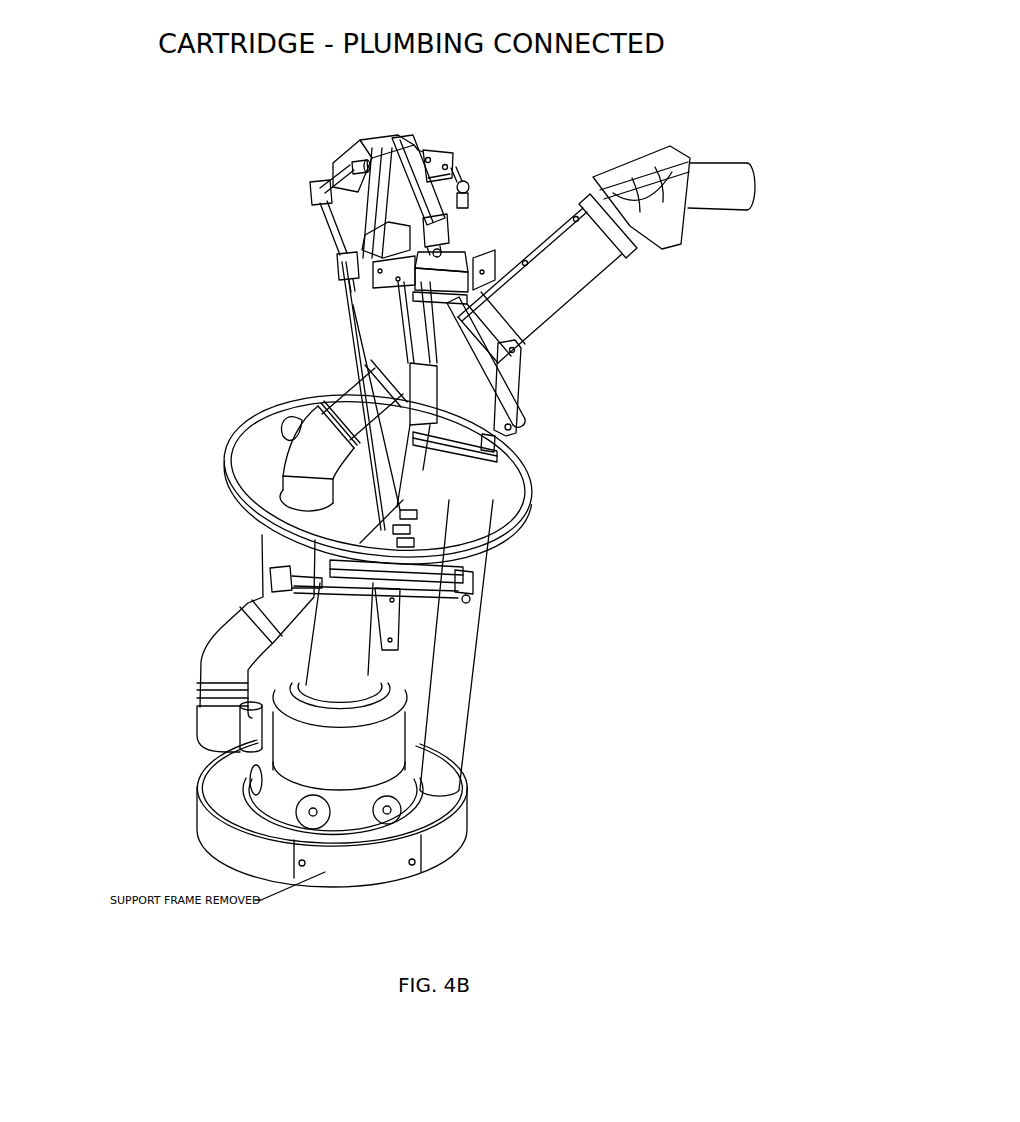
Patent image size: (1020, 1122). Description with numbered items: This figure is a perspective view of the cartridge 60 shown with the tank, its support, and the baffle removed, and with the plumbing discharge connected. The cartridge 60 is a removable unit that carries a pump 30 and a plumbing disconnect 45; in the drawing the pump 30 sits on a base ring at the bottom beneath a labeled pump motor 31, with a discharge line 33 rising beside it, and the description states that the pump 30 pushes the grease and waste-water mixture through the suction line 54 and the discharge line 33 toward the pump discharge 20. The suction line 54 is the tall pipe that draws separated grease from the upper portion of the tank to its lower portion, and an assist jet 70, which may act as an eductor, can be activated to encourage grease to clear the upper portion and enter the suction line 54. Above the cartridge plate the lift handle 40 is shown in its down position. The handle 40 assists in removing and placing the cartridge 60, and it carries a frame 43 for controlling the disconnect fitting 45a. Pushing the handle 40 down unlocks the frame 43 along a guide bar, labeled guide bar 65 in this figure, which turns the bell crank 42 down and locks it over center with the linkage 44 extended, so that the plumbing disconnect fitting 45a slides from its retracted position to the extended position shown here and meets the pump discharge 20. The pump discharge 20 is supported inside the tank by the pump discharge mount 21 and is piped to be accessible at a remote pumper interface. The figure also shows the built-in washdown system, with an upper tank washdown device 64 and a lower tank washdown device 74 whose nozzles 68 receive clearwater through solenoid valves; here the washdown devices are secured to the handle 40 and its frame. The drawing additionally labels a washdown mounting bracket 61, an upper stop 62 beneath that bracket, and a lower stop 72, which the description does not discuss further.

The pump discharge 20 is at (745, 209).
The pump discharge mount 21 is at (675, 240).
The pump 30 is at (377, 757).
The pump motor 31 is at (370, 673).
The discharge line 33 is at (220, 678).
The lift handle 40 is at (410, 153).
The bell crank 42 is at (517, 397).
The frame 43 is at (363, 303).
The linkage 44 is at (530, 317).
The plumbing disconnect 45 is at (632, 230).
The disconnect fitting 45a is at (553, 263).
The suction line 54 is at (463, 678).
The cartridge 60 is at (363, 117).
The washdown mounting bracket 61 is at (373, 137).
The upper stop 62 is at (350, 172).
The upper tank washdown device 64 is at (313, 196).
The guide bar 65 is at (352, 345).
The nozzles 68 is at (470, 198).
The assist jet 70 is at (513, 479).
The lower stop 72 is at (444, 464).
The lower tank washdown device 74 is at (468, 583).